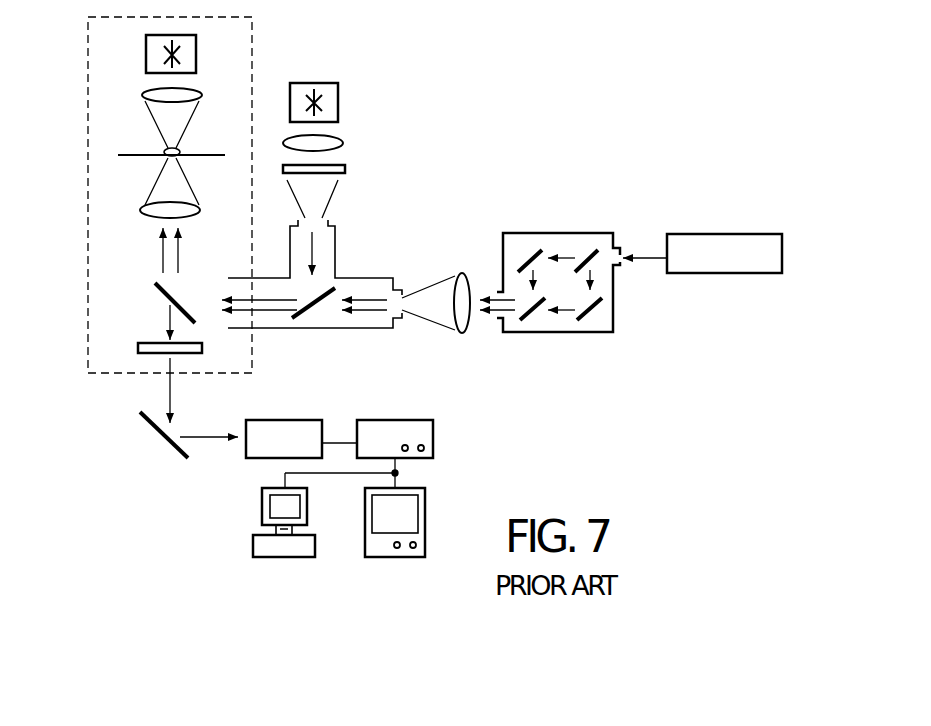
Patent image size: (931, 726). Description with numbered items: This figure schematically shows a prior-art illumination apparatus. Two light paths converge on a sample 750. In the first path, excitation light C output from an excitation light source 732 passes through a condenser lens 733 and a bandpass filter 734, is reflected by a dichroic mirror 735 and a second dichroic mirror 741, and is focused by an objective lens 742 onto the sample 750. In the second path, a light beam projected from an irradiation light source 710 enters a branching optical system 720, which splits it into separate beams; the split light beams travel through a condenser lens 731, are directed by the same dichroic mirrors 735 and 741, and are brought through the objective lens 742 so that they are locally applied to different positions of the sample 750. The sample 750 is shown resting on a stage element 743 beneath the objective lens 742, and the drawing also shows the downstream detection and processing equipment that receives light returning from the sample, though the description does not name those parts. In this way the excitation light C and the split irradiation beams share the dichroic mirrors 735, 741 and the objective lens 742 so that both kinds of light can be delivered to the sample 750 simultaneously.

The irradiation light source 710 is at (720, 275).
The branching optical system 720 is at (570, 333).
The condenser lens 731 is at (462, 274).
The excitation light source 732 is at (340, 100).
The condenser lens 733 is at (345, 142).
The bandpass filter 734 is at (347, 170).
The dichroic mirror 735 is at (305, 312).
The dichroic mirror 741 is at (158, 290).
The objective lens 742 is at (150, 218).
The sample stage 743 is at (122, 157).
The sample 750 is at (165, 151).
The excitation light C is at (334, 197).